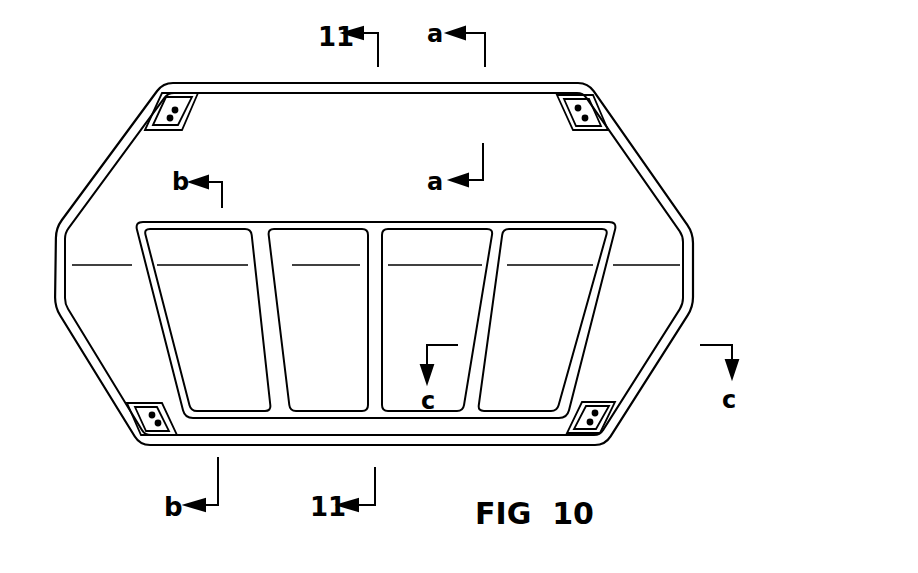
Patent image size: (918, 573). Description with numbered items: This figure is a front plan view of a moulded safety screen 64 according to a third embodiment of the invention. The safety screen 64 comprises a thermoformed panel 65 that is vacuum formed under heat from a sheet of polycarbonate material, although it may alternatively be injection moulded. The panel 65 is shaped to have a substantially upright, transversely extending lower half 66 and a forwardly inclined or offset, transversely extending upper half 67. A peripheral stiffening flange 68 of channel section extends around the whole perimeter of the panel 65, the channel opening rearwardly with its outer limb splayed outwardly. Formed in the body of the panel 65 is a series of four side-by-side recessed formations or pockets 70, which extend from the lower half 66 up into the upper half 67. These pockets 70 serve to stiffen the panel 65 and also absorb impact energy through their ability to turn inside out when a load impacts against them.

The safety screen 64 is at (690, 171).
The thermoformed panel 65 is at (682, 215).
The lower half 66 is at (618, 333).
The upper half 67 is at (593, 195).
The peripheral stiffening flange 68 is at (532, 83).
The recessed formations or pockets 70 is at (214, 325).